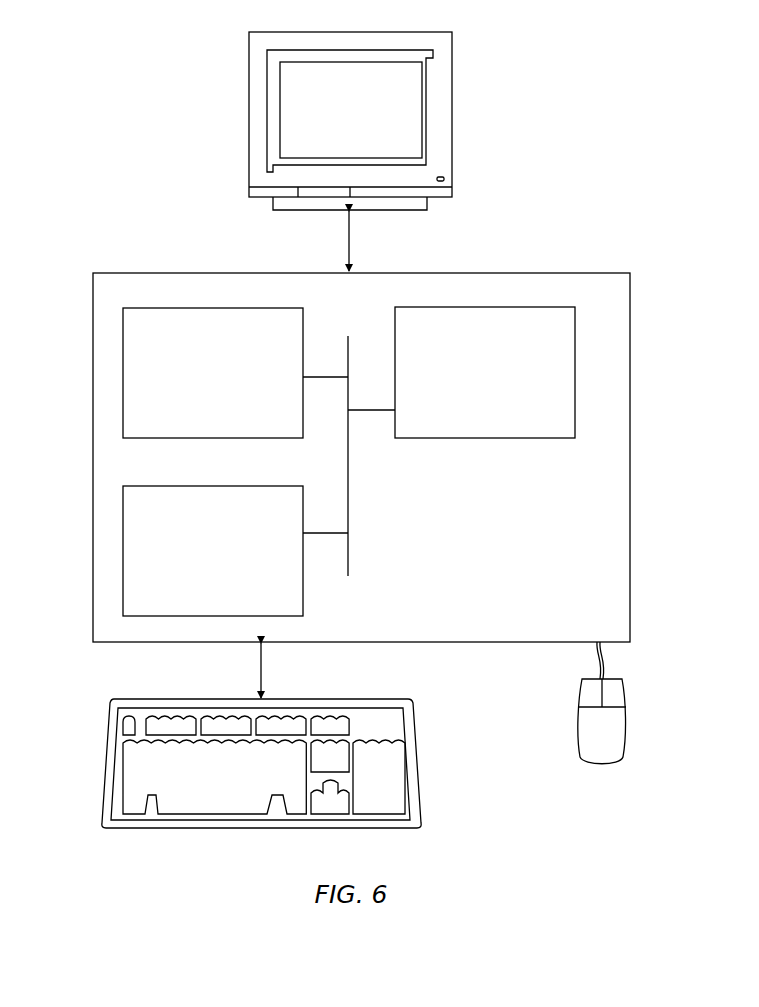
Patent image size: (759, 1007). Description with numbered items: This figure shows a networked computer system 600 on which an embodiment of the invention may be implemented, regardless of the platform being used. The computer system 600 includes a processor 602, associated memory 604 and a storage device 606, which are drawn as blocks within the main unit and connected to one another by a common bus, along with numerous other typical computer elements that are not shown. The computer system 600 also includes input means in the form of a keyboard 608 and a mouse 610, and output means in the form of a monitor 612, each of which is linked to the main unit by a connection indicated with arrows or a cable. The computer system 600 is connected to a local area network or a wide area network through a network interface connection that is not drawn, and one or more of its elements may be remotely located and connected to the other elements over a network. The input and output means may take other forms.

The networked computer system 600 is at (643, 156).
The processor 602 is at (463, 374).
The memory 604 is at (196, 382).
The storage device 606 is at (193, 562).
The keyboard 608 is at (190, 797).
The mouse 610 is at (583, 739).
The monitor 612 is at (332, 123).